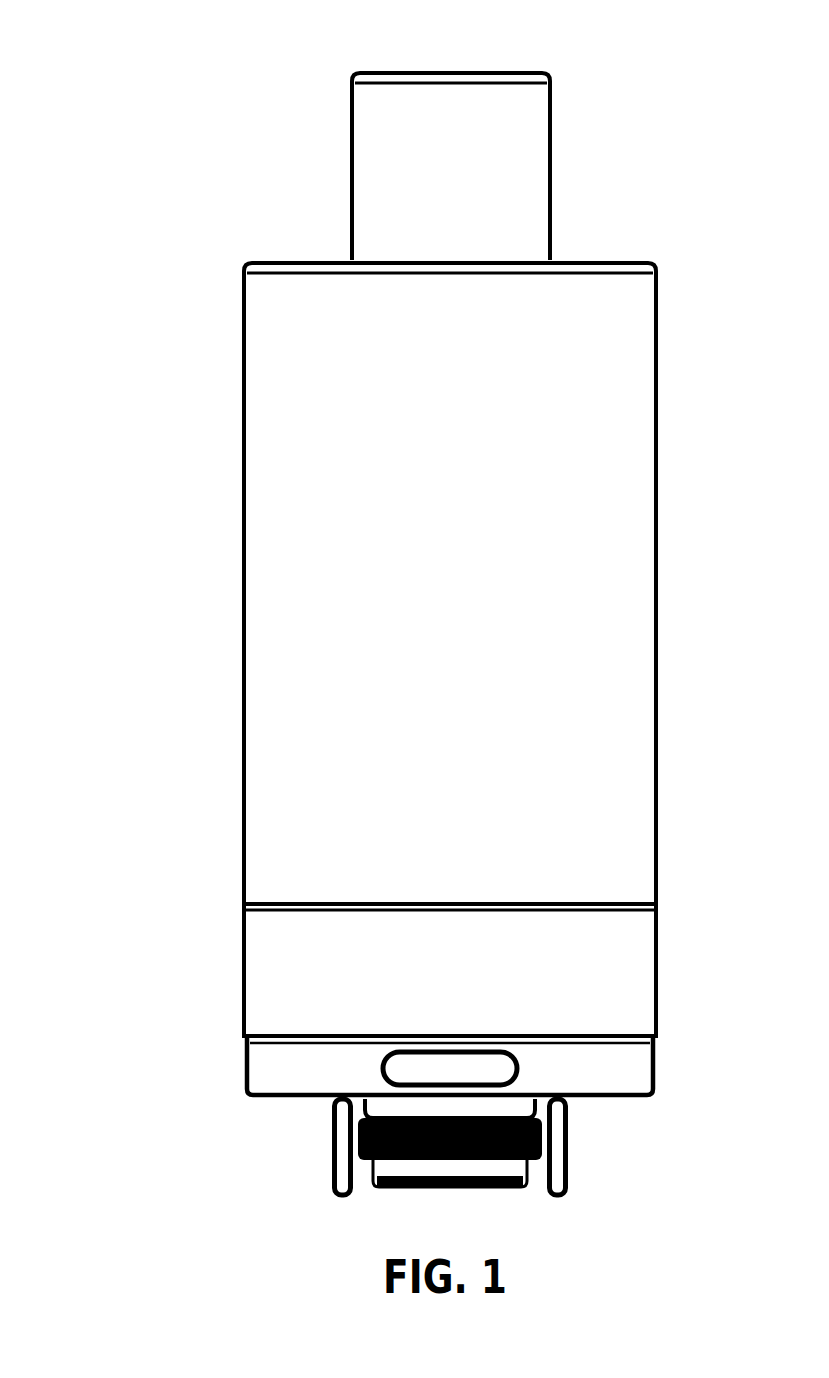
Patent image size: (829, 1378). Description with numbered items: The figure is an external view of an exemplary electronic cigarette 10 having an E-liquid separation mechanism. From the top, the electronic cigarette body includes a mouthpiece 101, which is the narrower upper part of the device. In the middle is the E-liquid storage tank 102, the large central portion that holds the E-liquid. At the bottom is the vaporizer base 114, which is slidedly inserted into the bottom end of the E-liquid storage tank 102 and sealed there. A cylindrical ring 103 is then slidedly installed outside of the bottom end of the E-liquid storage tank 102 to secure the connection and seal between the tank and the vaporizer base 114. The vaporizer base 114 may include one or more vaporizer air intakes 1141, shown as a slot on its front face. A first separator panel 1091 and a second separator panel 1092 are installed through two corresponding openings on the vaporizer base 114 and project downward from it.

The electronic cigarette 10 is at (70, 143).
The mouthpiece 101 is at (352, 177).
The E-liquid storage tank 102 is at (244, 560).
The cylindrical ring 103 is at (244, 978).
The vaporizer base 114 is at (247, 1068).
The vaporizer air intake 1141 is at (407, 1067).
The first separator panel 1091 is at (332, 1143).
The second separator panel 1092 is at (568, 1143).